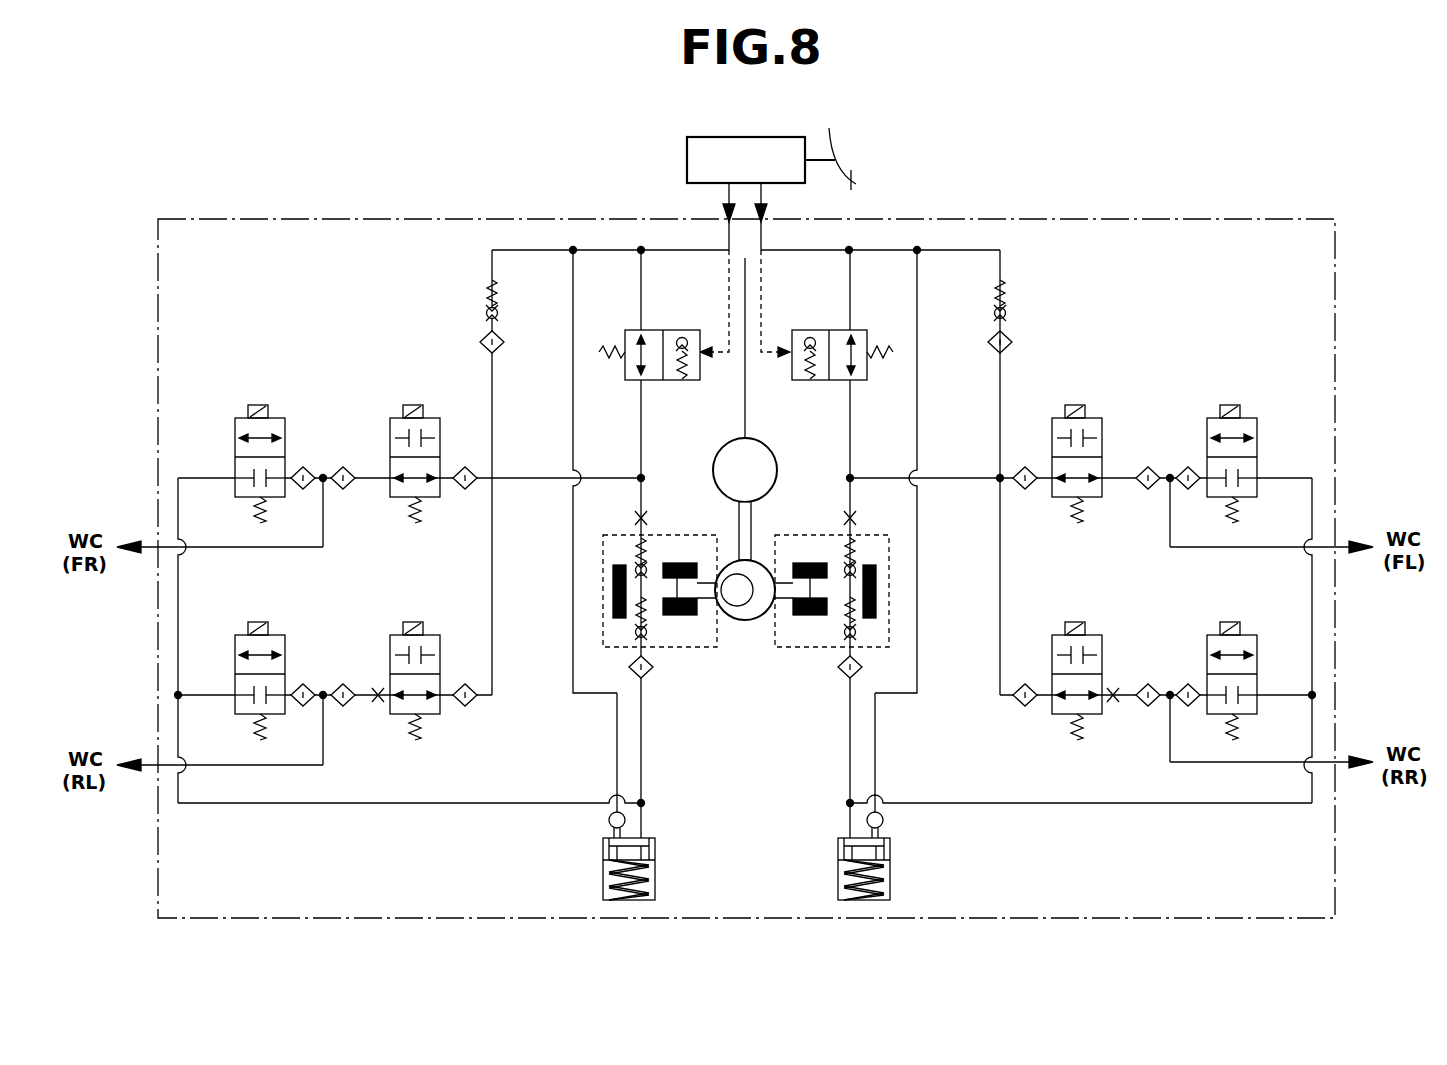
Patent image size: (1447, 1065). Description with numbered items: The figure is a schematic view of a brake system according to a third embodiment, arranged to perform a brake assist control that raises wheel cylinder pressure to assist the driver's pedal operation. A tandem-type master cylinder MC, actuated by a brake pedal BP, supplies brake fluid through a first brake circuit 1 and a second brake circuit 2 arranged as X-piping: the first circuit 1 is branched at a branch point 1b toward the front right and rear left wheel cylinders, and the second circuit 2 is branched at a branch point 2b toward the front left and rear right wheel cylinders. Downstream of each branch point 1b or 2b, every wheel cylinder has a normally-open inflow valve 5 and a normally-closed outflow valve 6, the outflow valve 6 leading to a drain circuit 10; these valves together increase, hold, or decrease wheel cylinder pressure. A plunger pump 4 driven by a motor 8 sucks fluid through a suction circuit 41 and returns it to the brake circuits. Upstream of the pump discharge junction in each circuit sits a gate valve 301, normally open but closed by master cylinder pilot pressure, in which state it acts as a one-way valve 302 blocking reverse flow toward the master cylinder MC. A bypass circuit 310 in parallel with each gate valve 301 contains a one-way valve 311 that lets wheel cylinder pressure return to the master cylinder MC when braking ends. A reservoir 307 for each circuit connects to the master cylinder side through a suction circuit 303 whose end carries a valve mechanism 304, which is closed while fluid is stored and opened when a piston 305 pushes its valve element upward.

The master cylinder MC is at (745, 137).
The brake pedal BP is at (851, 185).
The first brake circuit 1 is at (850, 430).
The branch point 1b is at (1000, 478).
The second brake circuit 2 is at (641, 432).
The branch point 2b is at (492, 478).
The pump 4 is at (745, 620).
The inflow valve 5 is at (432, 418).
The outflow valve 6 is at (277, 418).
The motor 8 is at (713, 470).
The drain circuit 10 is at (365, 803).
The suction circuit 41 is at (641, 752).
The gate valve 301 is at (655, 330).
The one-way valve 302 is at (685, 380).
The suction circuit 303 is at (617, 746).
The valve mechanism 304 is at (609, 820).
The piston 305 is at (838, 851).
The reservoir 307 is at (838, 886).
The bypass circuit 310 is at (492, 268).
The one-way valve 311 is at (486, 313).